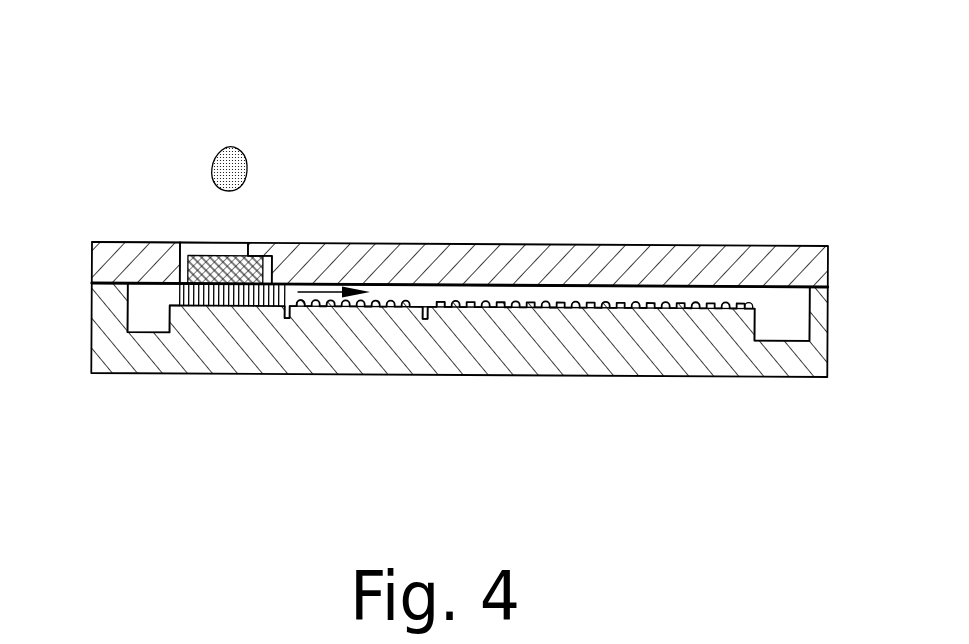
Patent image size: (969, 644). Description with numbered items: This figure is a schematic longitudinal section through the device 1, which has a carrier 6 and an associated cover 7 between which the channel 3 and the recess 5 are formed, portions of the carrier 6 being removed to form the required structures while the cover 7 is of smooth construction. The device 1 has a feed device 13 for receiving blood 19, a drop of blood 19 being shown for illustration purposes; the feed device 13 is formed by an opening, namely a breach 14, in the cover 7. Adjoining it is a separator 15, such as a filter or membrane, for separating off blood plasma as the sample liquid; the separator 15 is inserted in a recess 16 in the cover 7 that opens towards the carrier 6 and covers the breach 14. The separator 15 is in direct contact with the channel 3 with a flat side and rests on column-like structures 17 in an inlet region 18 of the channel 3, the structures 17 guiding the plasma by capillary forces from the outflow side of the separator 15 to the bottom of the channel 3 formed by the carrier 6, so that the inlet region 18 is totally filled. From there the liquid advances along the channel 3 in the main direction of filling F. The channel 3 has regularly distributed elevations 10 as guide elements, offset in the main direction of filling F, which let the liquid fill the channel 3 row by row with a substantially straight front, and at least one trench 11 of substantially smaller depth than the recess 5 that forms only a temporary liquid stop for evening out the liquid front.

The device 1 is at (628, 200).
The channel 3 is at (428, 266).
The recess 5 is at (135, 340).
The carrier 6 is at (717, 347).
The cover 7 is at (765, 245).
The elevations 10 is at (467, 306).
The trench 11 is at (433, 308).
The feed device 13 is at (283, 250).
The breach 14 is at (210, 242).
The separator 15 is at (276, 254).
The recess 16 is at (130, 242).
The column-like structures 17 is at (263, 305).
The inlet region 18 is at (181, 316).
The blood 19 is at (223, 152).
The main direction of filling F is at (325, 283).